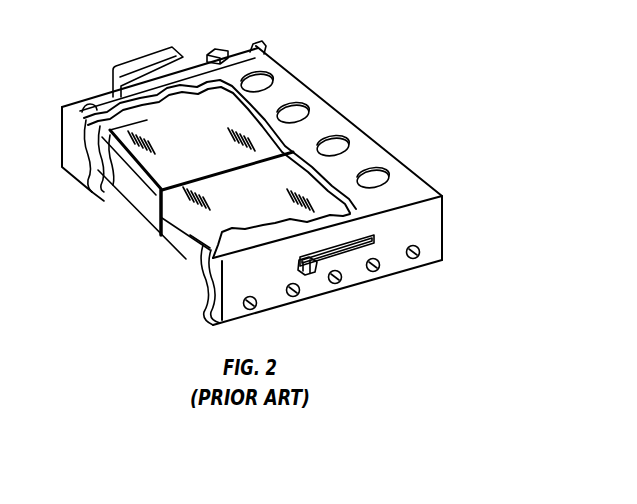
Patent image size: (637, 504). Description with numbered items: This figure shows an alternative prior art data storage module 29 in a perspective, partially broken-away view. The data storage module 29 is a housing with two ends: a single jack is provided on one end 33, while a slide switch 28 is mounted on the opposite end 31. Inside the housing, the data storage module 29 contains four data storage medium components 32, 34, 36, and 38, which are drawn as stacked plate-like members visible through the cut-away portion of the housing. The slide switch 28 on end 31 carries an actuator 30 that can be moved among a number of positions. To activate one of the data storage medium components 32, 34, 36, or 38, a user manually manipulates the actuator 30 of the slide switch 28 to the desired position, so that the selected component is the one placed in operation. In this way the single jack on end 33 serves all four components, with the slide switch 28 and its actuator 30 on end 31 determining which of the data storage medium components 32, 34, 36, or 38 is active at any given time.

The slide switch 28 is at (348, 260).
The data storage module 29 is at (343, 110).
The actuator 30 is at (310, 274).
The end 31 is at (390, 242).
The data storage medium component 32 is at (137, 208).
The end 33 is at (258, 49).
The data storage medium component 34 is at (130, 182).
The data storage medium component 36 is at (197, 260).
The data storage medium component 38 is at (187, 227).